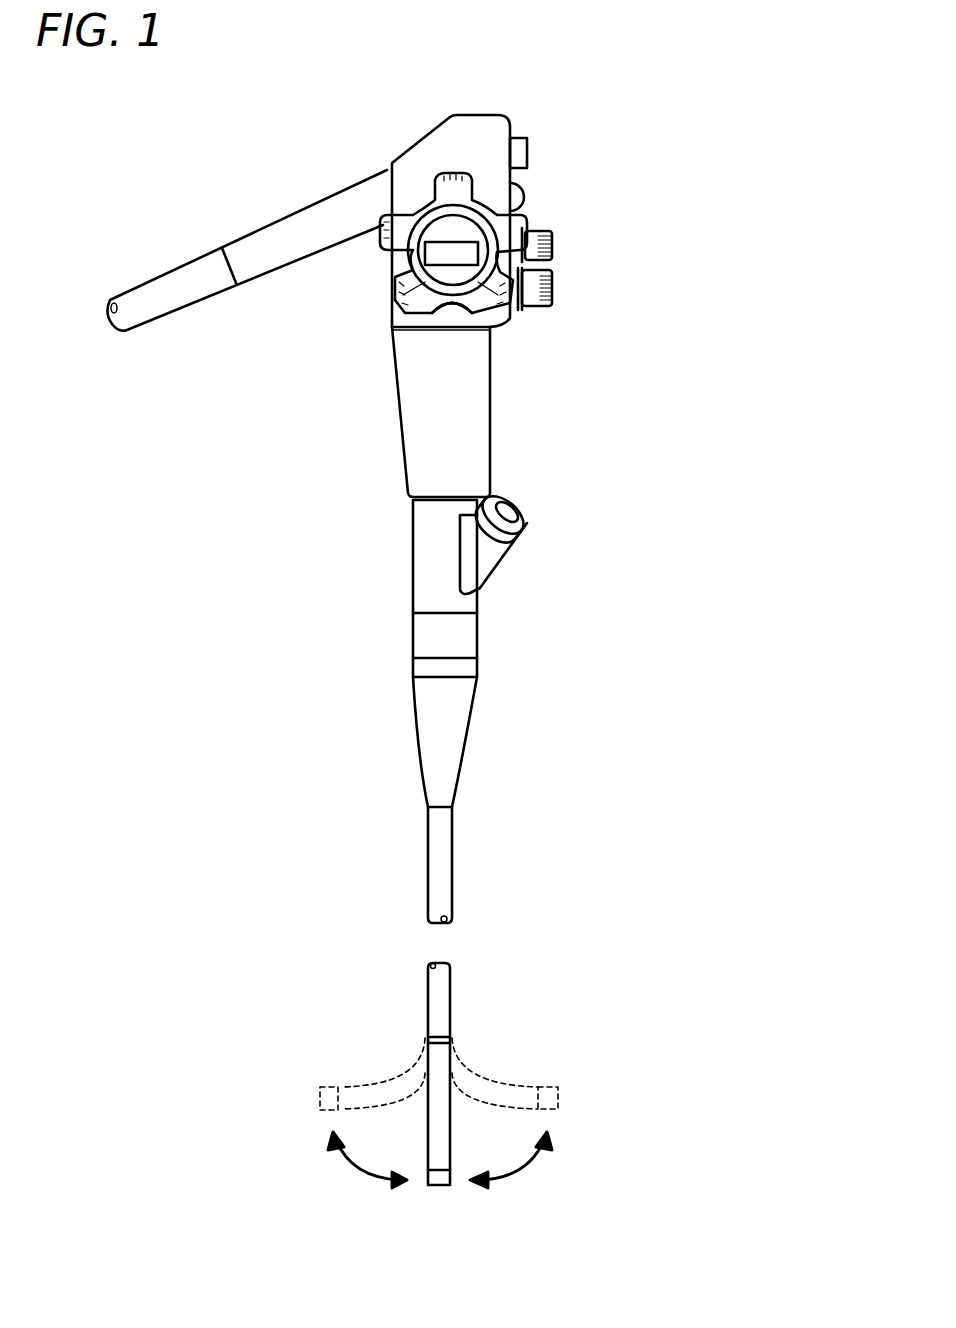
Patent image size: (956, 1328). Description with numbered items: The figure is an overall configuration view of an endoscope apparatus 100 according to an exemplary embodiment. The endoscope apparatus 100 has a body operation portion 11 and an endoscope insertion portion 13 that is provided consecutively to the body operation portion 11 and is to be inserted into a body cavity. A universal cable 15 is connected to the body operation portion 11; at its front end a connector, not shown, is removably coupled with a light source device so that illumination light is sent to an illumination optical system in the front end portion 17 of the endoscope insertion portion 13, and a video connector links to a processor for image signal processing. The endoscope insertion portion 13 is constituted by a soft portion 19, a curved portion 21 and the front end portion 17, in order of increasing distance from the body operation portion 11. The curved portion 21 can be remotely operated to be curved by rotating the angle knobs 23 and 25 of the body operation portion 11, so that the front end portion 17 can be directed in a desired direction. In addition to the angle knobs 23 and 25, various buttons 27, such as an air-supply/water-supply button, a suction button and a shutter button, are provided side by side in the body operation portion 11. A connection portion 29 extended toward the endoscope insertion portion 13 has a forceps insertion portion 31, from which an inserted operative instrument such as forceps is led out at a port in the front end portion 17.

The endoscope apparatus 100 is at (572, 88).
The body operation portion 11 is at (495, 432).
The endoscope insertion portion 13 is at (492, 980).
The universal cable 15 is at (167, 273).
The front end portion 17 is at (437, 1188).
The soft portion 19 is at (427, 855).
The curved portion 21 is at (450, 1115).
The angle knob 23 is at (392, 327).
The angle knob 25 is at (510, 323).
The buttons 27 is at (527, 155).
The connection portion 29 is at (413, 552).
The forceps insertion portion 31 is at (527, 515).